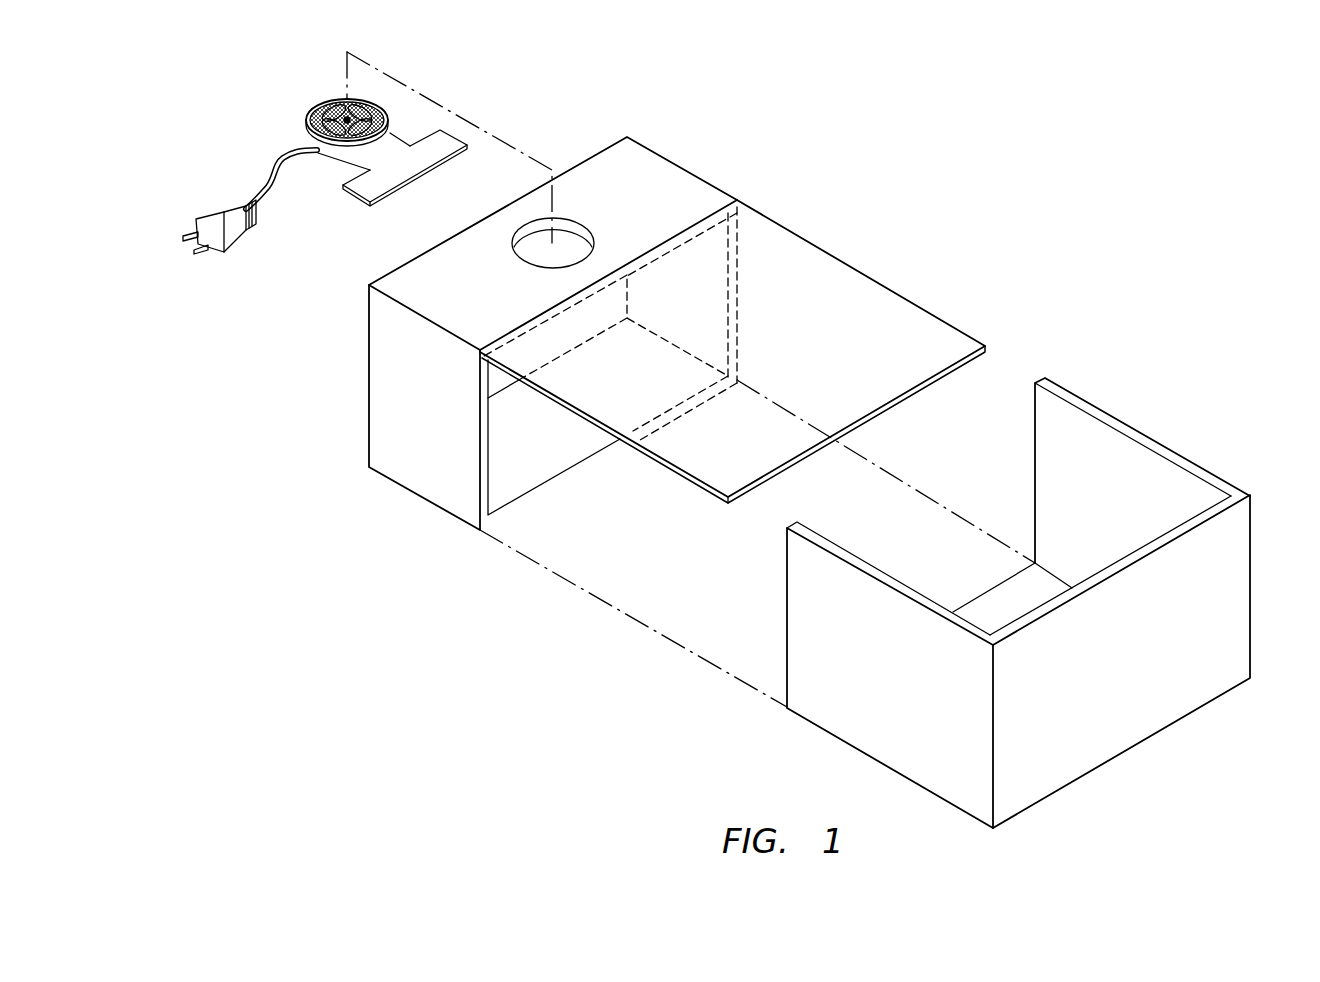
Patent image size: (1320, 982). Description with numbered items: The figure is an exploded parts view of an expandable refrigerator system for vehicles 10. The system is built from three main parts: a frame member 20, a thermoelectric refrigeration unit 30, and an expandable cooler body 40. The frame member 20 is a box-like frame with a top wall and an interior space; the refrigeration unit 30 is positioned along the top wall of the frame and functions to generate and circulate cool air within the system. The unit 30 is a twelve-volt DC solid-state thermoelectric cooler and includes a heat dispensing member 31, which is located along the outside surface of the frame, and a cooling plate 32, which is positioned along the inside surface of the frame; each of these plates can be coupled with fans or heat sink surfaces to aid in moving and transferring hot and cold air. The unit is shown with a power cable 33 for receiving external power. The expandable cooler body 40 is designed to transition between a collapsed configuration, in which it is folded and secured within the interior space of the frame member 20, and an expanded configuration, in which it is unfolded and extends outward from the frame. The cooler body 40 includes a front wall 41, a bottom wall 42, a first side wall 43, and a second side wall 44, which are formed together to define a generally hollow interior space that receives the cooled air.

The expandable refrigerator system for vehicles 10 is at (1032, 169).
The frame member 20 is at (689, 107).
The thermoelectric refrigeration unit 30 is at (361, 44).
The heat dispensing member 31 is at (306, 125).
The cooling plate 32 is at (367, 183).
The power cord with plug 33 is at (276, 196).
The expandable cooler body 40 is at (1093, 340).
The front wall 41 is at (1149, 688).
The bottom wall 42 is at (1000, 603).
The first side wall 43 is at (883, 688).
The second side wall 44 is at (1118, 521).